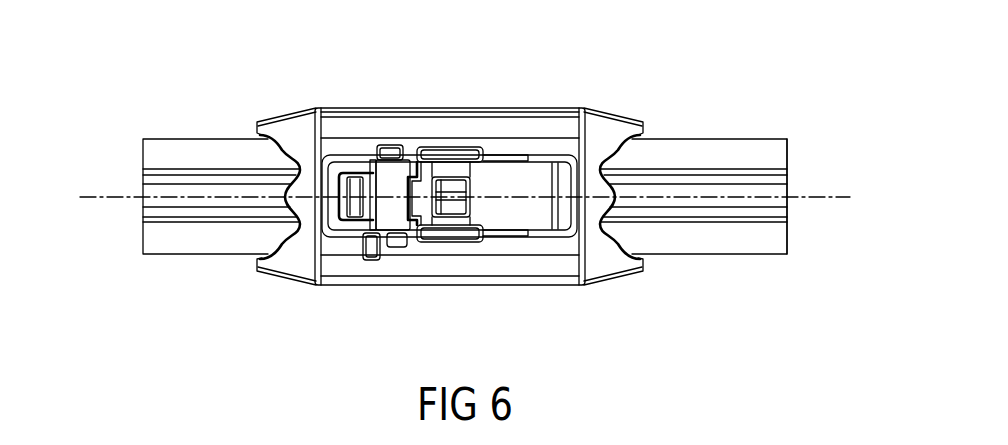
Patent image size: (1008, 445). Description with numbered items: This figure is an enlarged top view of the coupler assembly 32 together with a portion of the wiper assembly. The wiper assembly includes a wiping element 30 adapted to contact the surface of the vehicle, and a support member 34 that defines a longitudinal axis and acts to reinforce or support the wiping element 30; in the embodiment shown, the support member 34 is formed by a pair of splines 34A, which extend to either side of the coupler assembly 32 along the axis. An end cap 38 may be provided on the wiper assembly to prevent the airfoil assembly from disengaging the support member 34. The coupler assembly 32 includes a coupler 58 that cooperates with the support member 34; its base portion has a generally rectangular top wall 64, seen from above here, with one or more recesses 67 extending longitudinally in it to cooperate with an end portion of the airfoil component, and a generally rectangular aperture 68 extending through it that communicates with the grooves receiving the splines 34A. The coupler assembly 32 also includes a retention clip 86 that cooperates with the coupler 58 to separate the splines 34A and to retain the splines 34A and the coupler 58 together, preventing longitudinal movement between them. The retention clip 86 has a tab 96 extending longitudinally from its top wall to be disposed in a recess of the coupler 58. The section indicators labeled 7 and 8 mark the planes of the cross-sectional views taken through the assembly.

The wiping element 30 is at (791, 174).
The coupler assembly 32 is at (512, 103).
The support member 34 is at (711, 135).
The splines 34A is at (655, 155).
The end cap 38 is at (725, 190).
The coupler 58 is at (337, 106).
The top wall 64 is at (543, 147).
The recess 67 is at (292, 160).
The aperture 68 is at (410, 249).
The retention clip 86 is at (394, 148).
The tab 96 is at (360, 210).
The section line 7- 7 is at (450, 347).
The section line 8- 8 is at (850, 132).